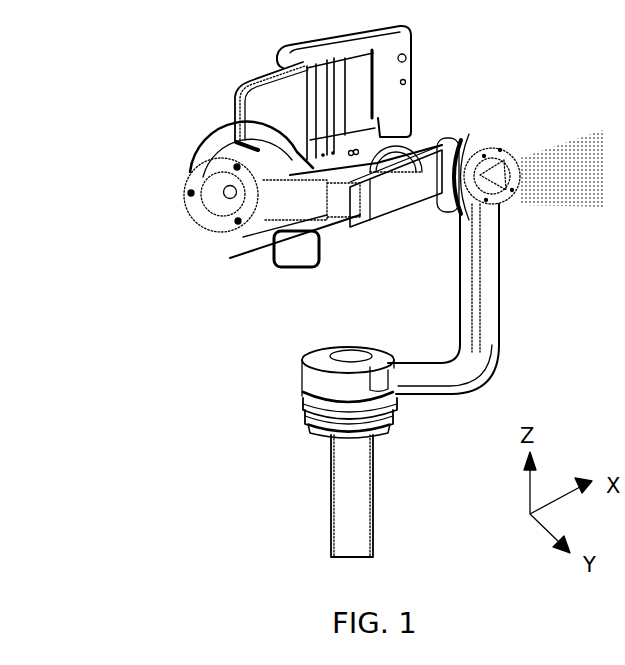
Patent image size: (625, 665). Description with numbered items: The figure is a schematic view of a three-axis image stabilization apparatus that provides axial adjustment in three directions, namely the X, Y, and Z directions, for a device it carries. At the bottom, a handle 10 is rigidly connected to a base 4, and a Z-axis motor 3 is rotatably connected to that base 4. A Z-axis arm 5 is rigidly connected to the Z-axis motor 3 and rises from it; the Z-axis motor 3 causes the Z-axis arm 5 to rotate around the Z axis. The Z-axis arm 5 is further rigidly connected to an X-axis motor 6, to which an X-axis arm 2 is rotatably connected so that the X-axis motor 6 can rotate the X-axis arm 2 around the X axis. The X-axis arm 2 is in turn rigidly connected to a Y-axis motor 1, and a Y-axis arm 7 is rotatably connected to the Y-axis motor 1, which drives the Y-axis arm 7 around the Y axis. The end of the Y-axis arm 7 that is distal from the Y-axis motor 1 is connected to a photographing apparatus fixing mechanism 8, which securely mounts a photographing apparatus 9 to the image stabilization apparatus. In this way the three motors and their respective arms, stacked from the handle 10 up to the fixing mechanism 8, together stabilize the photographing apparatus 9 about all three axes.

The Y-axis motor 1 is at (227, 163).
The X-axis arm 2 is at (283, 233).
The Z-axis motor 3 is at (297, 365).
The base 4 is at (307, 423).
The Z-axis arm 5 is at (492, 319).
The X-axis motor 6 is at (487, 167).
The Y-axis arm 7 is at (447, 131).
The photographing apparatus fixing mechanism 8 is at (380, 99).
The photographing apparatus 9 is at (393, 70).
The handle 10 is at (331, 494).